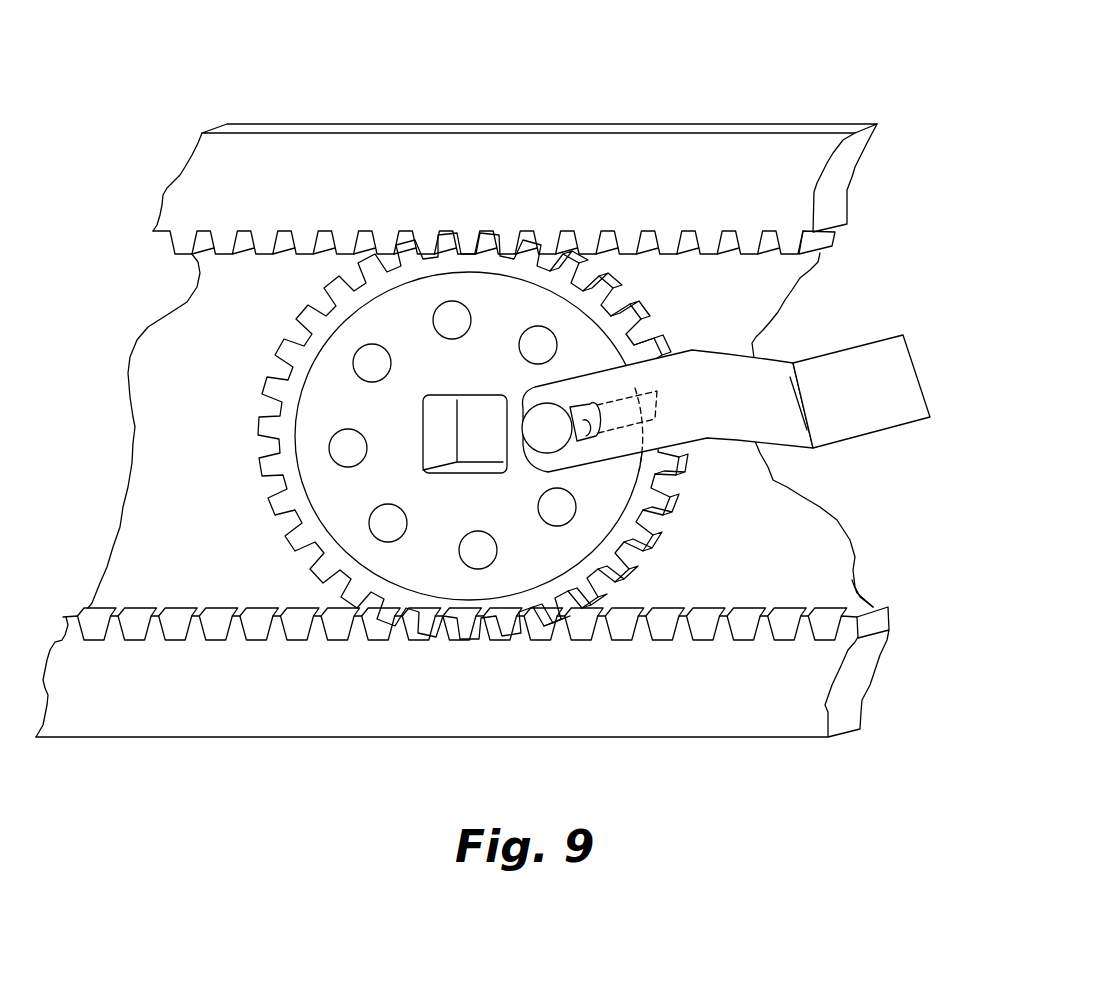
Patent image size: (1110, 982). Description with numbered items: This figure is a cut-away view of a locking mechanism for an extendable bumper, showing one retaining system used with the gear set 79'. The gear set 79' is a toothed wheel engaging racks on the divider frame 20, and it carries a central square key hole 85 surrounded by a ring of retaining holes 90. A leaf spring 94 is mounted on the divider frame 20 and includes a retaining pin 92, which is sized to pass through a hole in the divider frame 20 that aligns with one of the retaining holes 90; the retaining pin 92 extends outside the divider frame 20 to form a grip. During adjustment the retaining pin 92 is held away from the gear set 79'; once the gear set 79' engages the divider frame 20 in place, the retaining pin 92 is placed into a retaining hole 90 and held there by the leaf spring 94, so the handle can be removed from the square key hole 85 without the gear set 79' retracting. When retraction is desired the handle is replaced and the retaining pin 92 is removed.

The divider frame 20 is at (693, 100).
The gear set 79' is at (431, 436).
The square key hole 85 is at (482, 422).
The retaining holes 90 is at (556, 510).
The retaining pin 92 is at (597, 438).
The leaf spring 94 is at (765, 418).